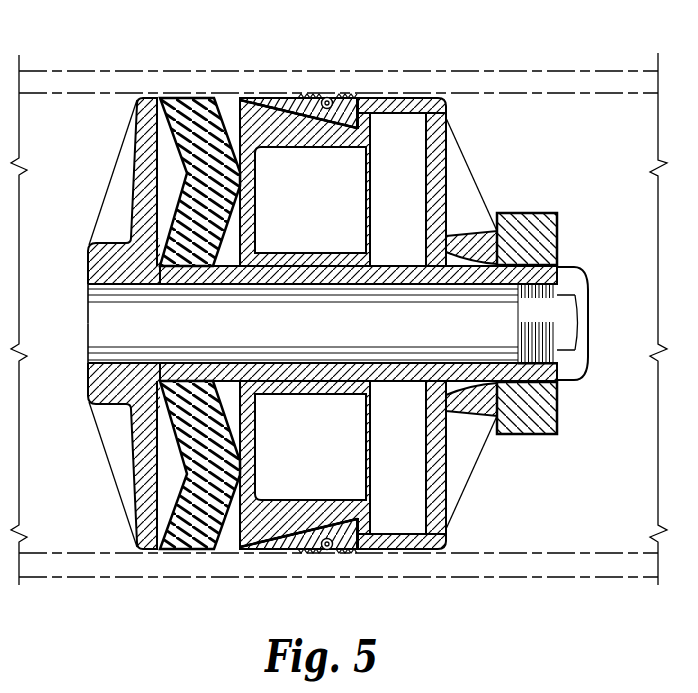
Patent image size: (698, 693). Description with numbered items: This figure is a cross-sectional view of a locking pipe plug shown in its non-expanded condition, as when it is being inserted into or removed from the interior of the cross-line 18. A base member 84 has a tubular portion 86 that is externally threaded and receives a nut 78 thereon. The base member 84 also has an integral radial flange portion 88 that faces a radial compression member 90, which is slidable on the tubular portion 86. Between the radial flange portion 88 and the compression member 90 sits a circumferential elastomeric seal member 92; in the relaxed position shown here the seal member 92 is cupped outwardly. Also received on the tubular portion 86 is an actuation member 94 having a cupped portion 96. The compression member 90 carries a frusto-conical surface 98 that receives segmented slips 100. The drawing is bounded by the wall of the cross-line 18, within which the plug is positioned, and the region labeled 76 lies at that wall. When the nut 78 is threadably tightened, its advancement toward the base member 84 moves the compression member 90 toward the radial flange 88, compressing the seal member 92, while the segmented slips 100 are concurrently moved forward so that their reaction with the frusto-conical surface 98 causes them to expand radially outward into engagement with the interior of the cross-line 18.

The cross-line 18 is at (146, 68).
The panel opening 76 is at (425, 64).
The nut 78 is at (530, 228).
The base member 84 is at (108, 391).
The tubular portion 86 is at (330, 370).
The radial flange portion 88 is at (145, 188).
The radial compression member 90 is at (268, 120).
The circumferential elastomeric seal member 92 is at (193, 525).
The actuation member 94 is at (466, 165).
The cupped portion 96 is at (410, 100).
The frusto-conical surface 98 is at (350, 130).
The segmented slips 100 is at (343, 103).